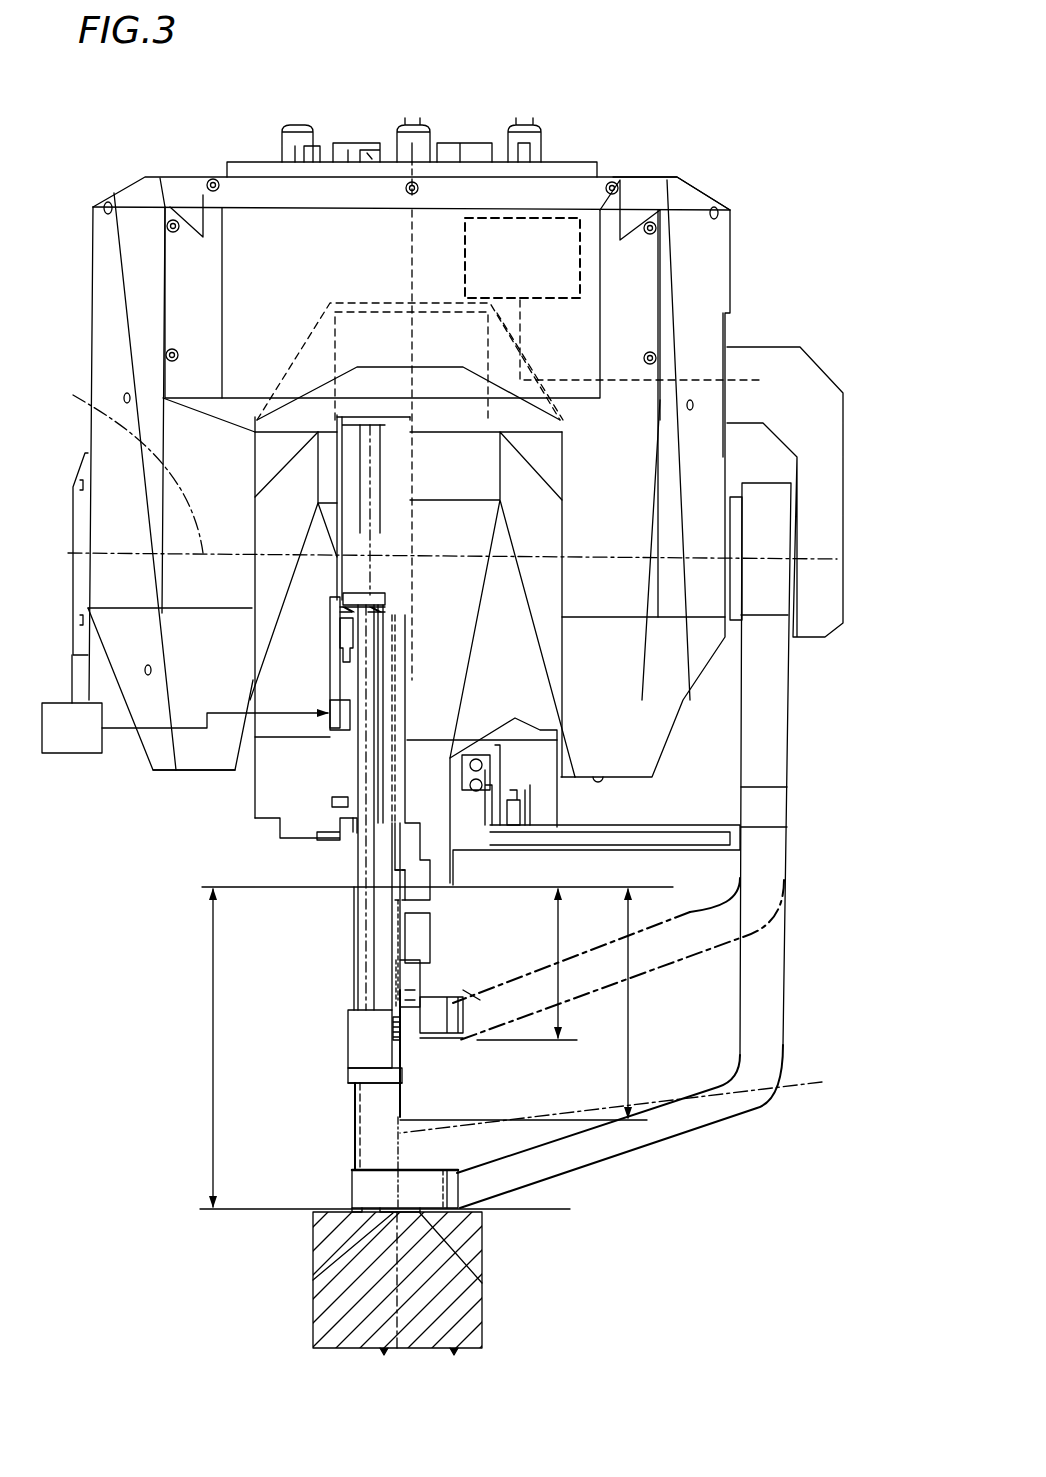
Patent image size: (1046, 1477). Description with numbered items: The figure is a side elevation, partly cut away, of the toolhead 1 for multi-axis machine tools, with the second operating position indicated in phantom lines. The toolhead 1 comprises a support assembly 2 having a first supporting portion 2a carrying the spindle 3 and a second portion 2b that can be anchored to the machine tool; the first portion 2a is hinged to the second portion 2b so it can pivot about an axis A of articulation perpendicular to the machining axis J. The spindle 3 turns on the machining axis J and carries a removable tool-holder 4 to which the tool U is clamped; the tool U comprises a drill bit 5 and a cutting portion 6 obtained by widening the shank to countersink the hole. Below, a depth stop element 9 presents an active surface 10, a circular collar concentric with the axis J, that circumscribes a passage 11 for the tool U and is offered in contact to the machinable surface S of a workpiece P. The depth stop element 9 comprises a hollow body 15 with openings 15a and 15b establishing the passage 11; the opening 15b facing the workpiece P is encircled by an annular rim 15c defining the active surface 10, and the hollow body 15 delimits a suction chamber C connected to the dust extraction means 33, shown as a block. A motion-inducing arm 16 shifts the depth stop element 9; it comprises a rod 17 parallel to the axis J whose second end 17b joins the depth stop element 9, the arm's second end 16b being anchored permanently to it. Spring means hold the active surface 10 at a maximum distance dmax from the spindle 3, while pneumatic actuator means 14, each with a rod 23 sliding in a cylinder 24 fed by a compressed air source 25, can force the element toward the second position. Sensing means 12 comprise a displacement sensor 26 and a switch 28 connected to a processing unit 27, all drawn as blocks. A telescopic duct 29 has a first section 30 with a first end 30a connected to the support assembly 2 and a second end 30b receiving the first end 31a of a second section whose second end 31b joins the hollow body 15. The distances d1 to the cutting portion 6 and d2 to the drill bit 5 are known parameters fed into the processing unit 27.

The toolhead 1 is at (847, 330).
The support assembly 2 is at (742, 280).
The first supporting portion 2a is at (273, 760).
The second portion 2b is at (680, 197).
The spindle 3 is at (452, 862).
The tool-holder 4 is at (432, 932).
The drill bit 5 is at (402, 1110).
The cutting portion 6 is at (410, 1040).
The depth stop element 9 is at (343, 1215).
The active surface 10 is at (373, 1217).
The passage 11 is at (387, 1170).
The sensing means 12 is at (330, 632).
The actuator means 14 is at (357, 833).
The hollow body 15 is at (350, 1168).
The opening 15a is at (413, 1165).
The opening 15b is at (313, 1280).
The annular rim 15c is at (482, 1283).
The motion-inducing arm 16 is at (342, 965).
The second end 16b is at (355, 1090).
The rod 17 is at (403, 930).
The second end 17b is at (392, 1043).
The rod 23 is at (365, 863).
The cylinder 24 is at (367, 713).
The source of compressed air 25 is at (335, 800).
The displacement sensor 26 is at (337, 712).
The processing unit 27 is at (185, 728).
The switch 28 is at (338, 600).
The duct 29 is at (788, 902).
The first section 30 is at (792, 707).
The first end 30a is at (773, 502).
The second end 30b is at (788, 808).
The first end 31a is at (777, 827).
The second end 31b is at (483, 1187).
The dust extraction means 33 is at (522, 258).
The axis of articulation A is at (118, 467).
The suction chamber C is at (345, 1192).
The machining axis J is at (621, 1099).
The workpiece P is at (487, 1268).
The machinable surface S is at (480, 1207).
The tool U is at (402, 1083).
The distance d1 is at (536, 964).
The distance d2 is at (531, 1004).
The maximum distance dmax is at (262, 992).